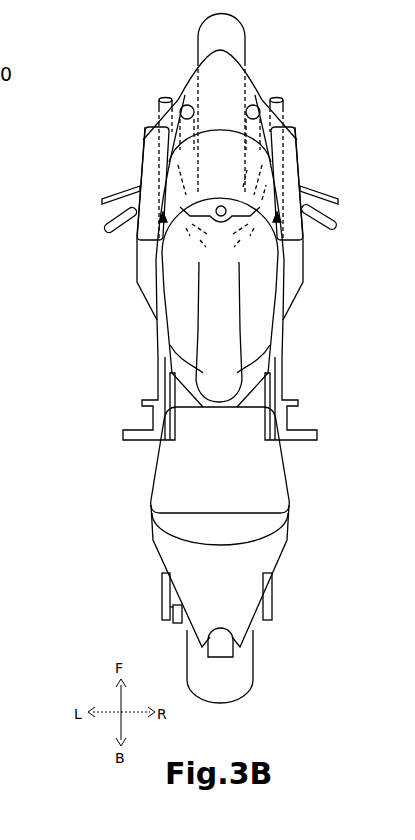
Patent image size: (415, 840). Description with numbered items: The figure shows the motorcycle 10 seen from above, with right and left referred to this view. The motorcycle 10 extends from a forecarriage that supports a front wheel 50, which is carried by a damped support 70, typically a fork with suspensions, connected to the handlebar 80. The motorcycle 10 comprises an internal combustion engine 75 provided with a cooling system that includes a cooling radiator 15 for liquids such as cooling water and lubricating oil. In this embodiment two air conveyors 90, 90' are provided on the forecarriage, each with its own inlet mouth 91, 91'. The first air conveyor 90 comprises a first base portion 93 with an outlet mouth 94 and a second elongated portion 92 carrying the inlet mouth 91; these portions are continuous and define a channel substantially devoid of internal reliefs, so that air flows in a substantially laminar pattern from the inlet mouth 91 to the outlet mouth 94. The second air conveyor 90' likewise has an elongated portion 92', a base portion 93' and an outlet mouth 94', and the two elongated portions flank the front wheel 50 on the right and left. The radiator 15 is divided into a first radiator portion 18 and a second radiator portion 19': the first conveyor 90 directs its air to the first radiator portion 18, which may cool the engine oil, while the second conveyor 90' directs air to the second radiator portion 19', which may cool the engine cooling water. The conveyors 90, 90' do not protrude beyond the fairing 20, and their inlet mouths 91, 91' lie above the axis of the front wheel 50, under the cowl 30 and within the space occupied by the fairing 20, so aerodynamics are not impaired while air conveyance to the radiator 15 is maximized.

The motorcycle 10 is at (106, 433).
The cooling radiator 15 is at (202, 249).
The first radiator portion 18 is at (190, 227).
The second radiator portion 19' is at (305, 260).
The fairing 20 is at (303, 245).
The cowl 30 is at (290, 173).
The front wheel 50 is at (220, 27).
The damped support 70 is at (258, 108).
The internal combustion engine 75 is at (284, 374).
The handlebar 80 is at (334, 217).
The first air conveyor 90 is at (113, 180).
The second air conveyor 90' is at (333, 175).
The inlet mouth 91 is at (147, 65).
The inlet mouth 91' is at (325, 79).
The second elongated portion 92 is at (115, 152).
The elongated portion 92' is at (325, 161).
The first base portion 93 is at (91, 209).
The base portion 93' is at (340, 186).
The outlet mouth 94 is at (135, 267).
The outlet mouth 94' is at (306, 265).